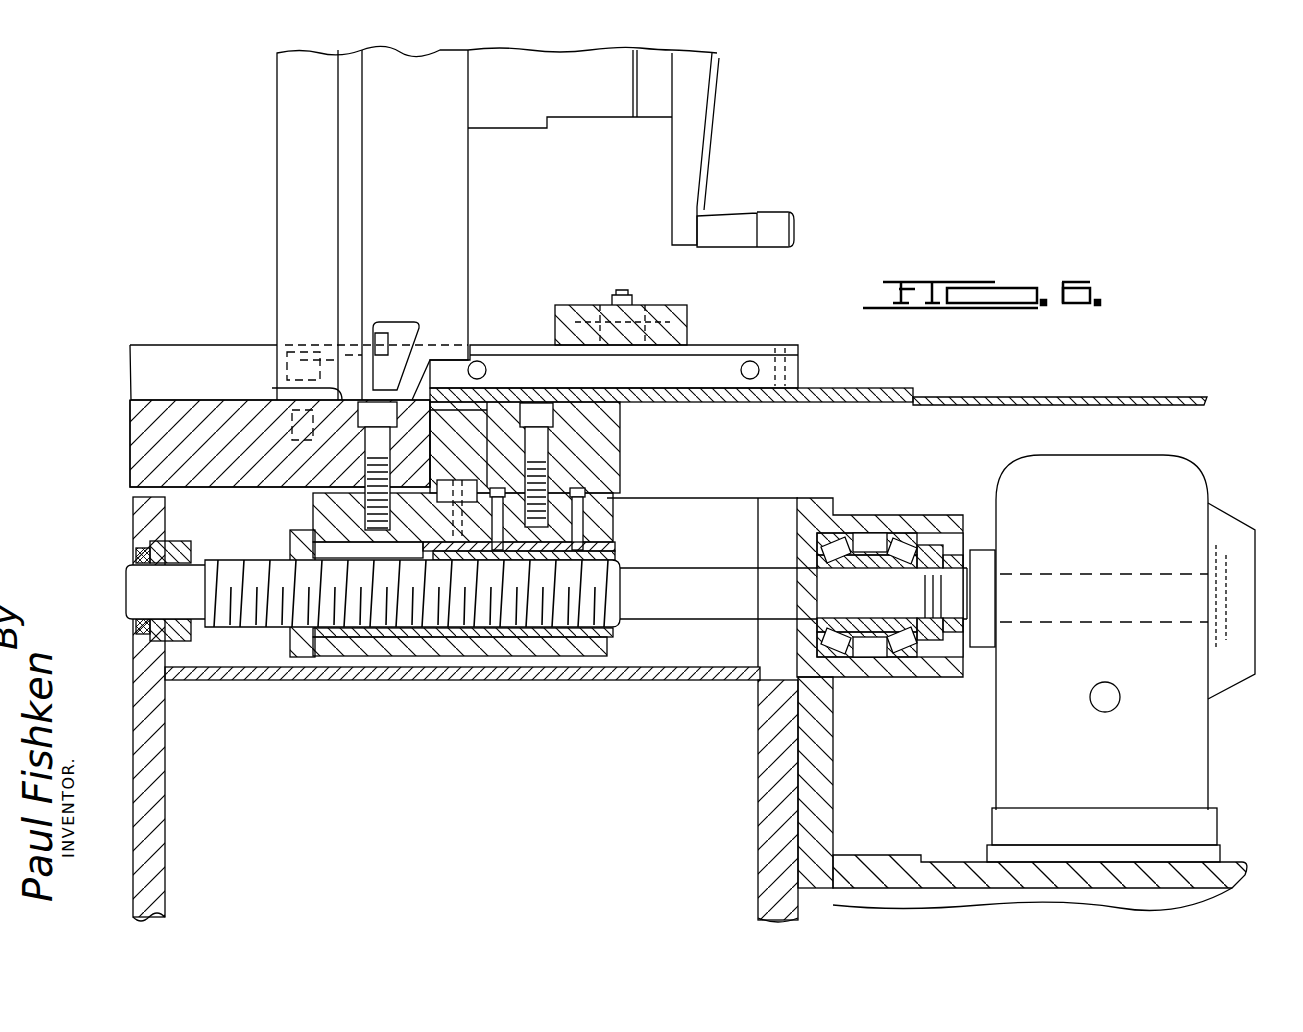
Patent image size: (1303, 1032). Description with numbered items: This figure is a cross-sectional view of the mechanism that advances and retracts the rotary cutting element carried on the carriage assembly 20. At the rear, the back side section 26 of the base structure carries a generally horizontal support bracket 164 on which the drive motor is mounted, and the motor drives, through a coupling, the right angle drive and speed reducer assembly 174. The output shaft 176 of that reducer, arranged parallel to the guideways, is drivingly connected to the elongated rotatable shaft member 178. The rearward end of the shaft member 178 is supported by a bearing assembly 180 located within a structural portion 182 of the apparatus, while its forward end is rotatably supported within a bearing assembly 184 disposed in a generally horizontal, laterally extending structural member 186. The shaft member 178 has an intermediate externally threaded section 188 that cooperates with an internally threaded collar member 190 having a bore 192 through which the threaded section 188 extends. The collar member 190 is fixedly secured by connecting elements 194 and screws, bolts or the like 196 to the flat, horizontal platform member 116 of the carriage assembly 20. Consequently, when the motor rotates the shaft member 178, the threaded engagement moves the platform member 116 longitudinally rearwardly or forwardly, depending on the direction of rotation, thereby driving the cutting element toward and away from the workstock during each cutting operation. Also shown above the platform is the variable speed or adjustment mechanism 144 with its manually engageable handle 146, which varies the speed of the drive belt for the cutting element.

The carriage assembly 20 is at (522, 275).
The back side section 26 is at (768, 795).
The platform member 116 is at (130, 428).
The variable speed or adjustment mechanism 144 is at (277, 181).
The manually engageable handle 146 is at (687, 167).
The support bracket 164 is at (930, 861).
The right angle drive and speed reducer assembly 174 is at (1123, 465).
The output shaft 176 is at (960, 585).
The rotatable shaft member 178 is at (722, 619).
The bearing assembly 180 is at (905, 547).
The structural portion 182 is at (862, 672).
The bearing assembly 184 is at (143, 552).
The structural member 186 is at (160, 517).
The externally threaded section 188 is at (593, 596).
The internally threaded collar member 190 is at (500, 630).
The bore 192 is at (385, 617).
The connecting elements 194 is at (330, 513).
The screws, bolts or the like 196 is at (378, 457).